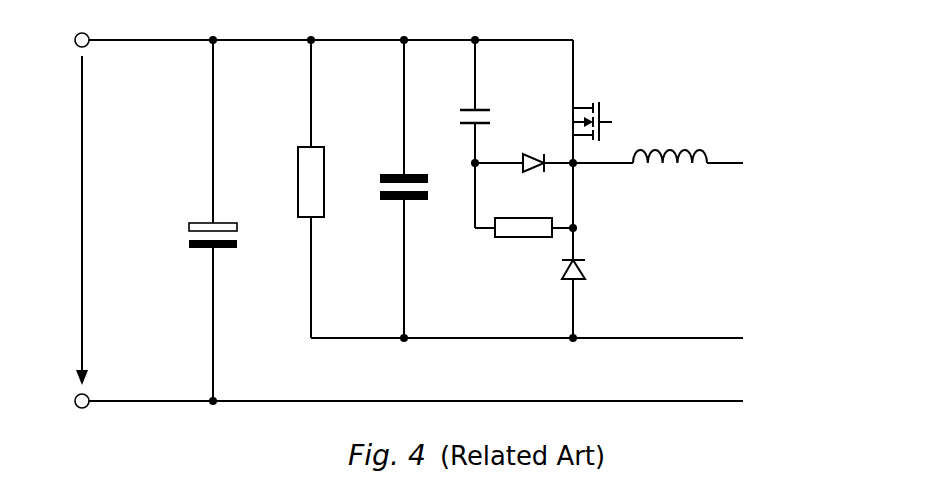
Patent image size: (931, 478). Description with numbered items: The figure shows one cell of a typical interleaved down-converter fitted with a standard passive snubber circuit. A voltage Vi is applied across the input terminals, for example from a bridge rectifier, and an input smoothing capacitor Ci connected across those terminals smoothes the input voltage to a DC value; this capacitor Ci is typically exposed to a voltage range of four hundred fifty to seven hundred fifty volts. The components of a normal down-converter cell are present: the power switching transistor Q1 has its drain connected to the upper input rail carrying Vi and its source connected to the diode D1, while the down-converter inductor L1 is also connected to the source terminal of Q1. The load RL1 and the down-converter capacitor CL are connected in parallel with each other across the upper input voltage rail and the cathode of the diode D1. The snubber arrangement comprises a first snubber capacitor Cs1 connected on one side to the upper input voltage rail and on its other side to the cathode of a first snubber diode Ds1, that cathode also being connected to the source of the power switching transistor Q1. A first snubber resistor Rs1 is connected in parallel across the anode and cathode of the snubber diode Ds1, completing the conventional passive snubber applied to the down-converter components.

The input voltage Vi is at (124, 220).
The input smoothing capacitor Ci is at (200, 220).
The load RL1 is at (286, 189).
The down-converter capacitor CL is at (394, 189).
The first snubber capacitor Cs1 is at (488, 101).
The power switching transistor Q1 is at (569, 101).
The first snubber diode Ds1 is at (524, 177).
The first snubber resistor Rs1 is at (524, 218).
The diode D1 is at (584, 250).
The down-converter inductor L1 is at (658, 140).